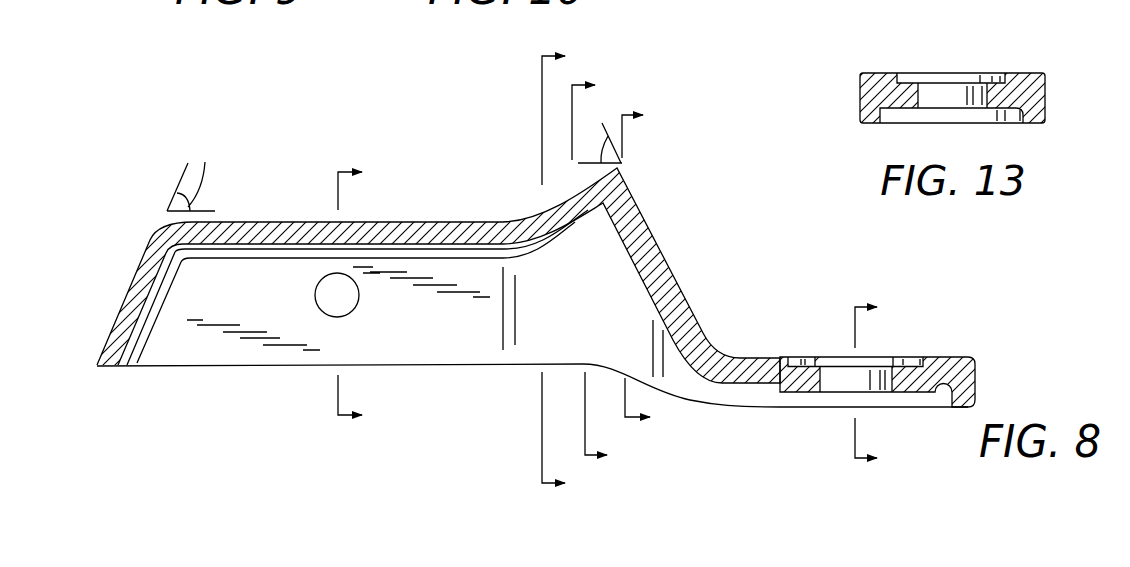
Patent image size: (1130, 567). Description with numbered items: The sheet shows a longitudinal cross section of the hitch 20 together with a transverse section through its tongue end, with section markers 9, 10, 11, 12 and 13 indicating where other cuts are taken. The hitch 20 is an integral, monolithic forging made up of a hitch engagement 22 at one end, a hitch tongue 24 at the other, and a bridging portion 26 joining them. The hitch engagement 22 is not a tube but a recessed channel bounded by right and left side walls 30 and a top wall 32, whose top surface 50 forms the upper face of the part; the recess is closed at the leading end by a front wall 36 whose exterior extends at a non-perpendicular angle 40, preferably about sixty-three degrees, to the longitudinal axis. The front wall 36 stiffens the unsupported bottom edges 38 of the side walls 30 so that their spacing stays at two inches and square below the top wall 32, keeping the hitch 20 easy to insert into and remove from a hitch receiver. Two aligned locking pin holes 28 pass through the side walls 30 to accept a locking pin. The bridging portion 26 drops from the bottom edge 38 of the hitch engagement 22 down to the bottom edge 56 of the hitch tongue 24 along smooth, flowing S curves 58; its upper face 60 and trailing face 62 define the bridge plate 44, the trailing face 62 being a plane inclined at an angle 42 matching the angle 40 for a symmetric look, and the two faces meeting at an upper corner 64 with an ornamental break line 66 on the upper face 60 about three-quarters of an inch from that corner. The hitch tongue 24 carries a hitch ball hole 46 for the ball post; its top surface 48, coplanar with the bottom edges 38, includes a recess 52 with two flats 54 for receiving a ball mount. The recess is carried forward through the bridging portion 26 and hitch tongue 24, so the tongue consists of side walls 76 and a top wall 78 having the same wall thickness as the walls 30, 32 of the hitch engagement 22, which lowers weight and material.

In FIG. 8, the hitch 20 is at (265, 106).
In FIG. 8, the hitch engagement 22 is at (283, 217).
In FIG. 8, the hitch tongue 24 is at (951, 351).
In FIG. 13, the hitch tongue 24 is at (1017, 68).
In FIG. 8, the bridging portion 26 is at (682, 262).
In FIG. 8, the locking pin holes 28 is at (313, 307).
In FIG. 8, the side walls 30 is at (408, 328).
In FIG. 8, the top wall 32 is at (300, 230).
In FIG. 8, the front wall 36 is at (132, 313).
In FIG. 8, the bottom edges 38 is at (258, 368).
In FIG. 8, the angle 40 is at (191, 170).
In FIG. 8, the angle 42 is at (600, 160).
In FIG. 8, the bridge plate 44 is at (633, 220).
In FIG. 8, the hitch ball hole 46 is at (842, 378).
In FIG. 13, the hitch ball hole 46 is at (938, 98).
In FIG. 8, the top surface 48 is at (780, 356).
In FIG. 13, the top surface 48 is at (878, 72).
In FIG. 8, the top surface 50 is at (422, 221).
In FIG. 8, the recess 52 is at (798, 358).
In FIG. 13, the recess 52 is at (960, 78).
In FIG. 8, the flats 54 is at (873, 358).
In FIG. 13, the flats 54 is at (897, 75).
In FIG. 8, the bottom edge 56 is at (825, 410).
In FIG. 13, the bottom edge 56 is at (900, 125).
In FIG. 8, the S curves 58 is at (623, 367).
In FIG. 8, the upper face 60 is at (595, 177).
In FIG. 8, the trailing face 62 is at (662, 255).
In FIG. 8, the upper corner 64 is at (627, 172).
In FIG. 8, the break line 66 is at (590, 183).
In FIG. 8, the side walls 76 is at (778, 404).
In FIG. 13, the side walls 76 is at (872, 118).
In FIG. 8, the top wall 78 is at (765, 372).
In FIG. 13, the top wall 78 is at (900, 90).
In FIG. 8, the section line 9- 9 is at (350, 293).
In FIG. 8, the section line 10- 10 is at (539, 253).
In FIG. 8, the section line 11- 11 is at (594, 266).
In FIG. 8, the section line 12- 12 is at (639, 265).
In FIG. 8, the section line 13- 13 is at (865, 380).